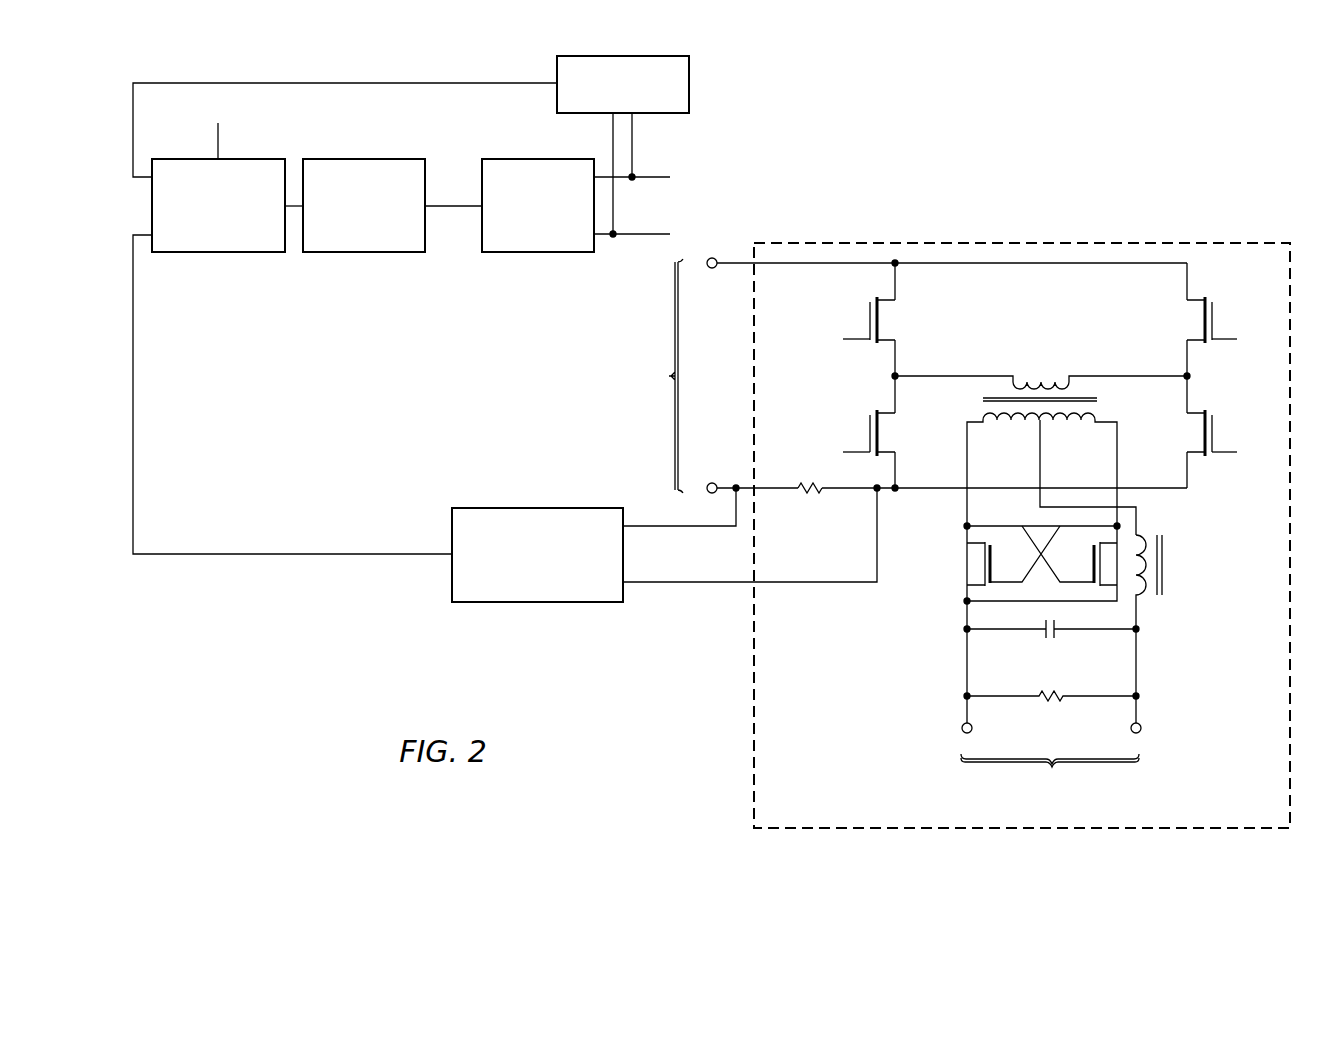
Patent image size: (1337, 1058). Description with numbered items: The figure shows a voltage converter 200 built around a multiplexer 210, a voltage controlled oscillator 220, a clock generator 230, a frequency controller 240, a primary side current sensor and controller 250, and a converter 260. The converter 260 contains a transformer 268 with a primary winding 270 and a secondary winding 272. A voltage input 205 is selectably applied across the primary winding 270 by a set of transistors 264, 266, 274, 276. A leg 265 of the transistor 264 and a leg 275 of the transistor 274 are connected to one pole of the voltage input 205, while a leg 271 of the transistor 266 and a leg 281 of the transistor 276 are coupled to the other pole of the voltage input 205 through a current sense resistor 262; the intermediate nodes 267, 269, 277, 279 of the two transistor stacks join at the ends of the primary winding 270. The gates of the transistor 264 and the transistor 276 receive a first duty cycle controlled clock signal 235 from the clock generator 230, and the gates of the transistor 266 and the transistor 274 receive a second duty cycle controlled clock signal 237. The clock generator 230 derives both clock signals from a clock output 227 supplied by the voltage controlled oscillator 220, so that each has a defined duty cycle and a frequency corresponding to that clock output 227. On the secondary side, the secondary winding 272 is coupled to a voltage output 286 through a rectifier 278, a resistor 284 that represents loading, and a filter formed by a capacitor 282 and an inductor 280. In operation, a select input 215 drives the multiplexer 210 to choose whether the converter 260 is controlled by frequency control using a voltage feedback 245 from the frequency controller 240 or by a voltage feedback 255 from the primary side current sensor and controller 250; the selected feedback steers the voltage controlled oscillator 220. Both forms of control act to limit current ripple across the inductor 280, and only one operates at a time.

The voltage converter 200 is at (1010, 121).
The voltage input 205 is at (675, 374).
The multiplexer 210 is at (212, 253).
The select input 215 is at (217, 142).
The voltage controlled oscillator 220 is at (362, 253).
The clock output 227 is at (463, 205).
The clock generator 230 is at (536, 253).
The first duty cycle controlled clock signal 235 is at (650, 177).
The second duty cycle controlled clock signal 237 is at (652, 238).
The frequency controller 240 is at (689, 83).
The voltage feedback 245 is at (308, 83).
The primary side current sensor and controller 250 is at (536, 602).
The voltage feedback 255 is at (306, 555).
The converter 260 is at (1073, 243).
The current sense resistor 262 is at (807, 494).
The transistor 264 is at (868, 311).
The leg of transistor 265 is at (897, 283).
The transistor 266 is at (868, 423).
The source node of first high-side transistor 267 is at (897, 358).
The transformer 268 is at (1041, 425).
The drain node of first low-side transistor 269 is at (897, 393).
The primary winding 270 is at (1049, 378).
The leg of transistor 271 is at (897, 472).
The secondary winding 272 is at (1020, 418).
The transistor 274 is at (1211, 311).
The leg of transistor 275 is at (1185, 283).
The transistor 276 is at (1211, 425).
The source node of second high-side transistor 277 is at (1185, 360).
The rectifier 278 is at (966, 564).
The drain node of second low-side transistor 279 is at (1185, 394).
The inductor 280 is at (1165, 575).
The leg of transistor 281 is at (1185, 472).
The capacitor 282 is at (1052, 640).
The resistor 284 is at (1046, 700).
The voltage output 286 is at (1051, 754).